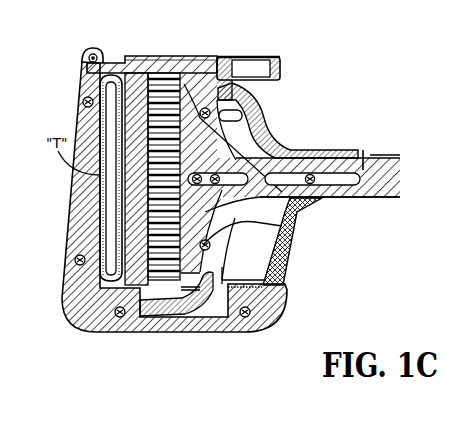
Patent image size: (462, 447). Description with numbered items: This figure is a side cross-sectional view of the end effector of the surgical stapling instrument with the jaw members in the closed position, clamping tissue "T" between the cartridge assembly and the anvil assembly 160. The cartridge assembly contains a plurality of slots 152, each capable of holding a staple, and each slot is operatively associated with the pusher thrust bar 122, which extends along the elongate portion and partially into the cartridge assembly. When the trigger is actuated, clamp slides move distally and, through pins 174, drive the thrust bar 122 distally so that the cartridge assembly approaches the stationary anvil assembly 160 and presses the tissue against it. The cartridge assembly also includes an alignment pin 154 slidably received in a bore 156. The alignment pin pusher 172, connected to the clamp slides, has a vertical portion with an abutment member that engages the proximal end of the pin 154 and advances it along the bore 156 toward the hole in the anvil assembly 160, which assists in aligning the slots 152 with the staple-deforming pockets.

The anvil assembly 160 is at (75, 88).
The alignment pin 154 is at (143, 62).
The bore 156 is at (247, 65).
The slots 152 is at (270, 96).
The alignment pin pusher 172 is at (278, 150).
The pusher thrust bar 122 is at (363, 150).
The pins 174 is at (288, 210).